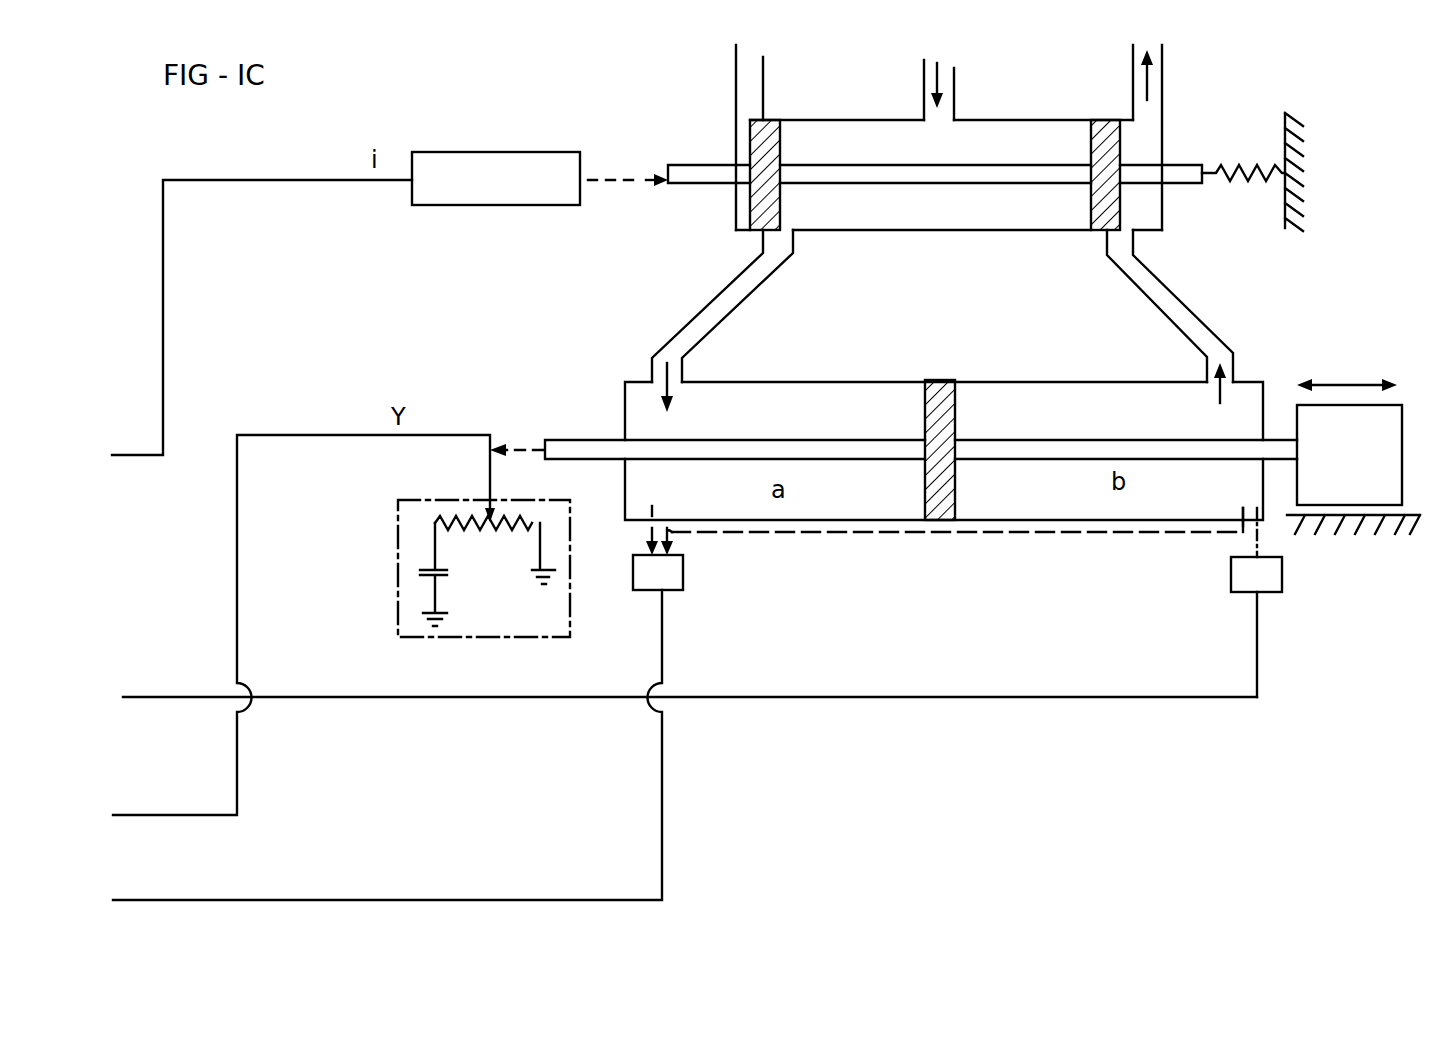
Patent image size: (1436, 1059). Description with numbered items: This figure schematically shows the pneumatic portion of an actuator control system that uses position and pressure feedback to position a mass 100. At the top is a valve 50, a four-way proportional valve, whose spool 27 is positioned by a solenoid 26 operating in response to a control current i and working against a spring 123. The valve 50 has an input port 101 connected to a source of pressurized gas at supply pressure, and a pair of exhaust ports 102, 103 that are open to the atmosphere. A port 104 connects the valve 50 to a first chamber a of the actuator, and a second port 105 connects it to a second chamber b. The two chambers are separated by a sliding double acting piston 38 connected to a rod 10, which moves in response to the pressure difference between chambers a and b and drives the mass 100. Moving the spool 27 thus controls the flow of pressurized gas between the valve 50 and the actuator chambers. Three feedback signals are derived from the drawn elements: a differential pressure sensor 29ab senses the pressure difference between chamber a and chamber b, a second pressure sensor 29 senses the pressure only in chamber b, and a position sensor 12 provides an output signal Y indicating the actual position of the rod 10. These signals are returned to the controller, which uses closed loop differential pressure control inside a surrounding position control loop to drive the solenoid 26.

The rod 10 is at (586, 432).
The position sensor 12 is at (460, 638).
The solenoid 26 is at (520, 133).
The spool 27 is at (1015, 166).
The pressure sensor 29 is at (1282, 572).
The differential pressure sensor 29ab is at (683, 573).
The sliding double acting piston 38 is at (955, 494).
The valve 50 is at (1182, 121).
The mass 100 is at (1398, 440).
The input port 101 is at (955, 80).
The exhaust port 102 is at (736, 88).
The exhaust port 103 is at (1165, 82).
The port 104 is at (710, 318).
The second port 105 is at (1208, 298).
The spring 123 is at (1240, 180).